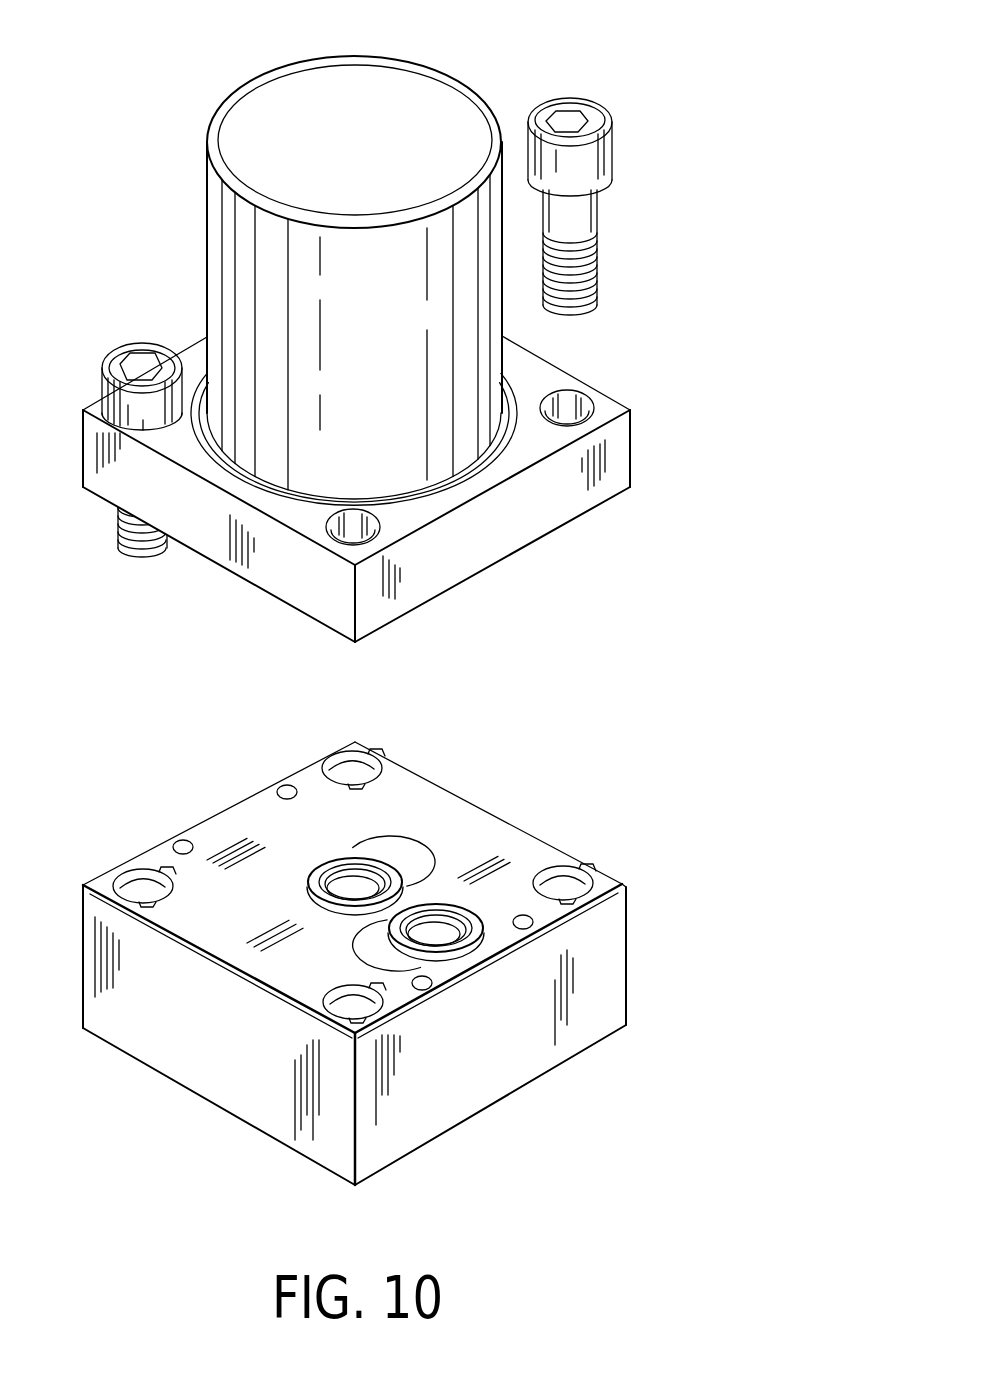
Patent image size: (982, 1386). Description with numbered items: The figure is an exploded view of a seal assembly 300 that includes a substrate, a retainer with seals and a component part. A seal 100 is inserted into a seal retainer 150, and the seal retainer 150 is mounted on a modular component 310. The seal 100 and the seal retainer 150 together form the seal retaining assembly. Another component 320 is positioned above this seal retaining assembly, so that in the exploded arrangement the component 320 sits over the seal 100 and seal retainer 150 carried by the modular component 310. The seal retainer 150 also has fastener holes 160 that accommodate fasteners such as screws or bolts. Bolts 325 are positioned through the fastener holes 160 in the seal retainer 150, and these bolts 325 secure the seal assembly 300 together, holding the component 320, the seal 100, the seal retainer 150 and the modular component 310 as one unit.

The seal assembly 300 is at (108, 154).
The component 320 is at (408, 107).
The bolts 325 is at (582, 163).
The modular component 310 is at (598, 960).
The seal retainer 150 is at (487, 822).
The fastener holes 160 is at (572, 878).
The seal 100 is at (383, 857).